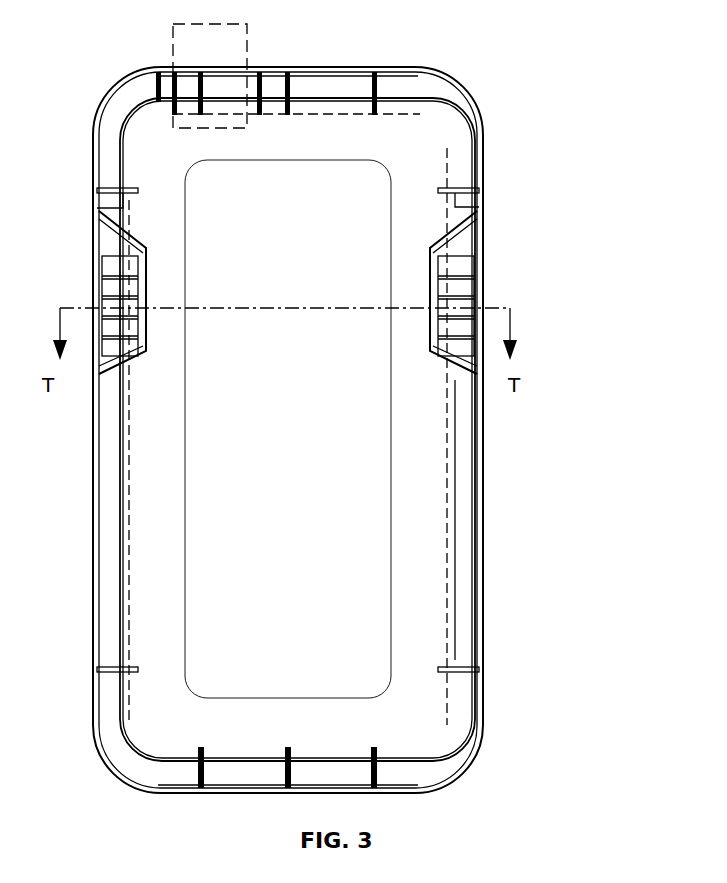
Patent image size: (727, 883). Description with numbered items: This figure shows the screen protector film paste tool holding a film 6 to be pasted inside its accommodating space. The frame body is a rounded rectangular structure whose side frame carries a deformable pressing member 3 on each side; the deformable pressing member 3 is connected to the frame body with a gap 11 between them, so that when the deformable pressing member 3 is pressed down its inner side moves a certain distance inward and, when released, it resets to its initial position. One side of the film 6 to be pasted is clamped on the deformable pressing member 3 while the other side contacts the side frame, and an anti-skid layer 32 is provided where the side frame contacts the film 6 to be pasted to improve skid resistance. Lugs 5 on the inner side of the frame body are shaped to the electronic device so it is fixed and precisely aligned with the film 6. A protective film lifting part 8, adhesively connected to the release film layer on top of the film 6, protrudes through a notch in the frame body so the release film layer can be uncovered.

The deformable pressing member 3 is at (482, 280).
The lug 5 is at (133, 187).
The film to be pasted 6 is at (413, 113).
The protective film lifting part 8 is at (228, 43).
The gap 11 is at (458, 360).
The anti-skid layer 32 is at (470, 250).